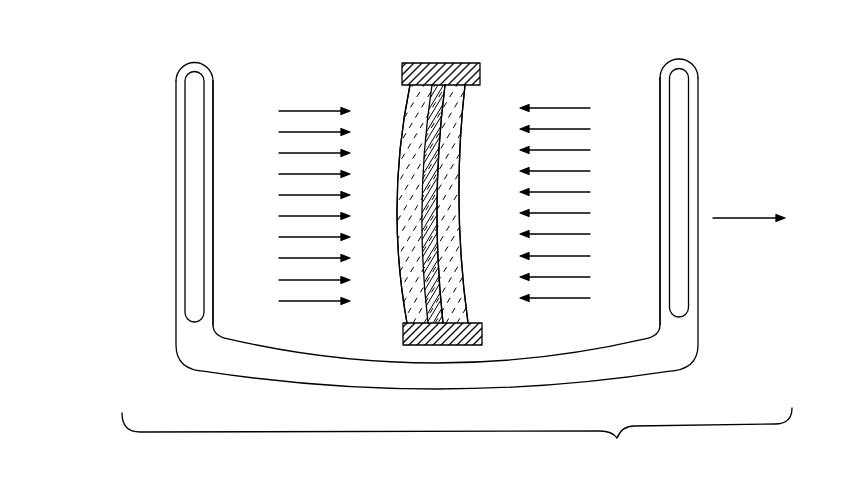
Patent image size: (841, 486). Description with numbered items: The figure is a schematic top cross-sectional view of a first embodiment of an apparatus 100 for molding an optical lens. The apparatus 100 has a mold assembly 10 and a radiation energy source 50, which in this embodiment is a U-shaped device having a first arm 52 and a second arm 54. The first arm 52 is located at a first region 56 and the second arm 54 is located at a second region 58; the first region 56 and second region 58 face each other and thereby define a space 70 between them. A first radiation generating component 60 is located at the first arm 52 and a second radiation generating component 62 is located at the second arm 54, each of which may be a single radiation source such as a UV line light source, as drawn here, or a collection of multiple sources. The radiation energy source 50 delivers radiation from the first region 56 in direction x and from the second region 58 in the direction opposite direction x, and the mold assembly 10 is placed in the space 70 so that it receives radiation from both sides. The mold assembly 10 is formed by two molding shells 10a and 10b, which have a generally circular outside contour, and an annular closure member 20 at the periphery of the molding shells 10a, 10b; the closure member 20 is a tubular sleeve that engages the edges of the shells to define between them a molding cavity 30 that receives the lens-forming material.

The apparatus 100 is at (131, 51).
The mold assembly 10 is at (396, 59).
The molding shell 10a is at (410, 135).
The molding shell 10b is at (465, 137).
The annular closure member 20 is at (443, 85).
The molding cavity 30 is at (470, 108).
The radiation energy source 50 is at (374, 401).
The first arm 52 is at (176, 137).
The second arm 54 is at (698, 130).
The first region 56 is at (257, 157).
The second region 58 is at (623, 163).
The first radiation generating component 60 is at (192, 280).
The second radiation generating component 62 is at (680, 277).
The space 70 is at (387, 227).
The direction X x is at (743, 215).